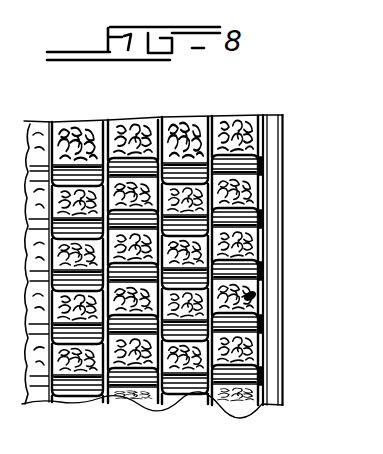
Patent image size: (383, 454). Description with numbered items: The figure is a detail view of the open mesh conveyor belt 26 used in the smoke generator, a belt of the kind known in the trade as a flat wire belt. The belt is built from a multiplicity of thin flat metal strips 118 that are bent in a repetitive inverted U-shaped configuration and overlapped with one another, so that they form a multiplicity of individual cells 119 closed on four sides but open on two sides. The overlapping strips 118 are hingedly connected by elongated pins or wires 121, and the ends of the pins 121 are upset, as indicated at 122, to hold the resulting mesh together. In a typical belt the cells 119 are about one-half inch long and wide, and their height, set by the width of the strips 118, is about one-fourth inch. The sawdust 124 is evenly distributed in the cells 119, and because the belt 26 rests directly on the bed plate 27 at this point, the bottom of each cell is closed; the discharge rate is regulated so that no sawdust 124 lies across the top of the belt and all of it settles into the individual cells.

The open mesh conveyor belt 26 is at (265, 165).
The bed plate 27 is at (270, 193).
The thin flat metal strips 118 is at (264, 250).
The individual cells 119 is at (255, 298).
The elongated pins or wires 121 is at (231, 388).
The upset pin ends 122 is at (270, 379).
The sawdust 124 is at (262, 244).